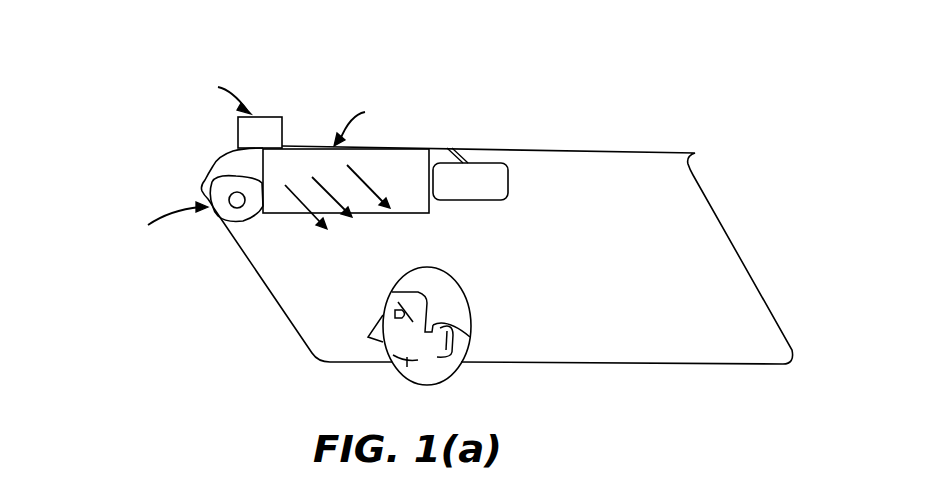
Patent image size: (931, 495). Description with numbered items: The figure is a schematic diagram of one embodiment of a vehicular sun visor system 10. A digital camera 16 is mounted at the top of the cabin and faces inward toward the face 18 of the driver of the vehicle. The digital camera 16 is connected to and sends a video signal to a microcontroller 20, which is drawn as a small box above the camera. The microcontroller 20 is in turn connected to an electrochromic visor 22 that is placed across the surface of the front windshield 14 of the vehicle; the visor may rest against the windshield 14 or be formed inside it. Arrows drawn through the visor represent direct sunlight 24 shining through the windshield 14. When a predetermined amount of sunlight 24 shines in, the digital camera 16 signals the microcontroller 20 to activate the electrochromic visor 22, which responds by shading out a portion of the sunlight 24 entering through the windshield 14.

The vehicular sun visor system 10 is at (55, 146).
The front windshield 14 is at (608, 172).
The digital camera 16 is at (224, 206).
The face of the driver 18 is at (403, 370).
The microcontroller 20 is at (265, 116).
The electrochromic visor 22 is at (427, 209).
The sunlight 24 is at (302, 210).